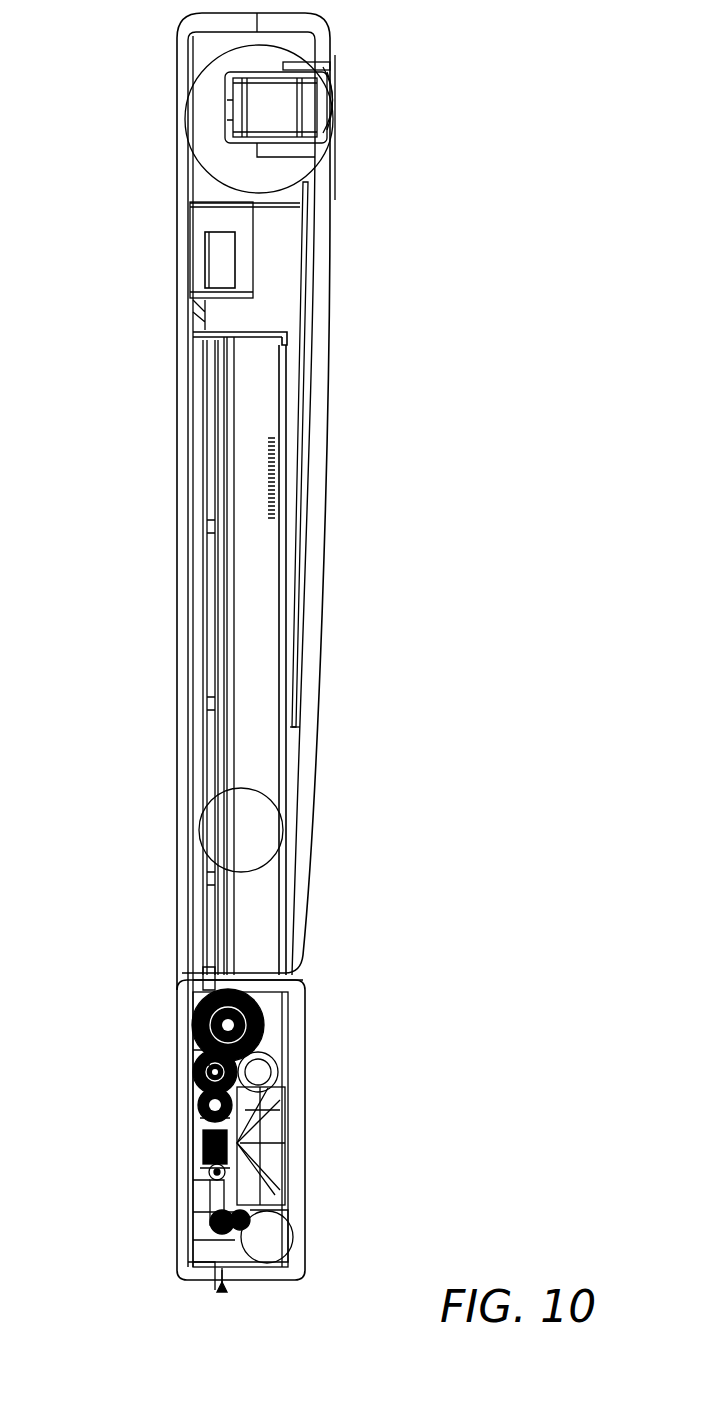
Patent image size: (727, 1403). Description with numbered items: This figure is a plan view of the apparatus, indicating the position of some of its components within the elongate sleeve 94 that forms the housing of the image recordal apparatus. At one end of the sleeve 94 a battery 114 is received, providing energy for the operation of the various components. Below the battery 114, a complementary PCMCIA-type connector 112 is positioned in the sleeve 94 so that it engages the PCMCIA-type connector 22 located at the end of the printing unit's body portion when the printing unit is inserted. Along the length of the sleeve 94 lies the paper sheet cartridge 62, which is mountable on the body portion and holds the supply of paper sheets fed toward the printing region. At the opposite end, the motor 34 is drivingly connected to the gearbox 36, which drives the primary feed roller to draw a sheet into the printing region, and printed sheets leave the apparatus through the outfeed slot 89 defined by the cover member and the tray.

The battery 114 is at (288, 55).
The motor 34 is at (270, 193).
The complementary PCMCIA-type connector 112 is at (195, 213).
The PCMCIA-type connector 22 is at (220, 268).
The sleeve 94 is at (190, 395).
The paper sheet cartridge 62 is at (258, 725).
The gearbox 36 is at (193, 1090).
The outfeed slot 89 is at (220, 1286).